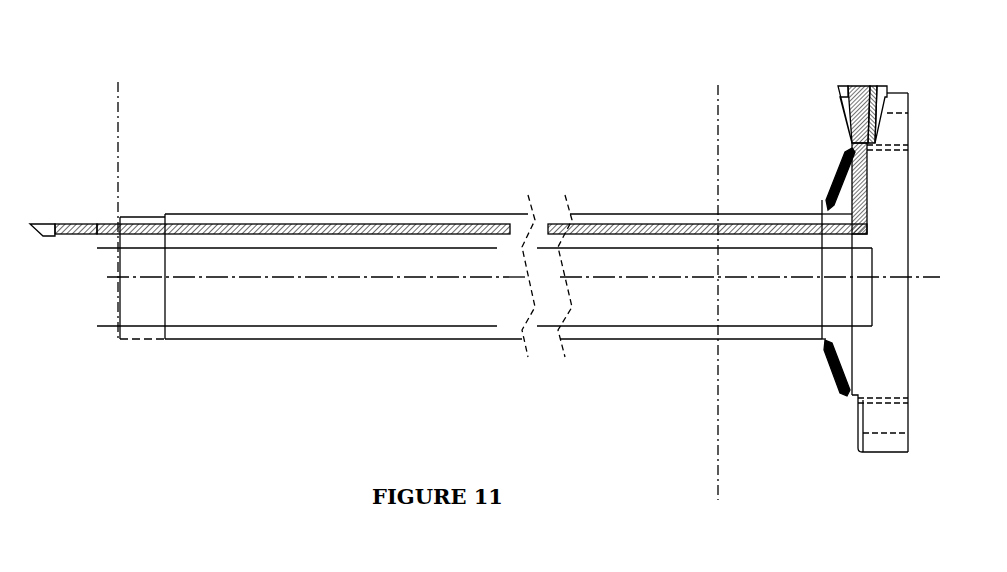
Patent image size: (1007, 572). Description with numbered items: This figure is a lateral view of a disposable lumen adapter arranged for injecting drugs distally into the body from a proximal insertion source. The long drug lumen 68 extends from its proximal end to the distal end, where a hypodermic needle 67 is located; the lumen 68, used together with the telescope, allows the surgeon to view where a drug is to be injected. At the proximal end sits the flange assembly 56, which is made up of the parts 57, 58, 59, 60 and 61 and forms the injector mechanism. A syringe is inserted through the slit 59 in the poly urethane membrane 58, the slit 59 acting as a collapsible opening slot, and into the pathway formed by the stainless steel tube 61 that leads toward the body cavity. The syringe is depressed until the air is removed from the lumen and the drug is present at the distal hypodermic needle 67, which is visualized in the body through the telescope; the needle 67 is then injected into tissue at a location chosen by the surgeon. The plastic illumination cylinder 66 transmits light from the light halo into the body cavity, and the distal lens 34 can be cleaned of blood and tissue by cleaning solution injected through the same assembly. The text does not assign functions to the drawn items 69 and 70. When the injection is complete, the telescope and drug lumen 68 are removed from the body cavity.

The distal lens 34 is at (118, 297).
The flange assembly 56 is at (832, 175).
The flange assembly component 57 is at (840, 97).
The poly urethane membrane 58 is at (850, 87).
The slit 59 is at (861, 86).
The flange assembly component 60 is at (882, 97).
The stainless steel tube 61 is at (860, 218).
The plastic illumination cylinder 66 is at (872, 297).
The hypodermic needle 67 is at (56, 225).
The lumen 68 is at (367, 227).
The outer pipe 69 is at (277, 338).
The lower flange 70 is at (825, 570).